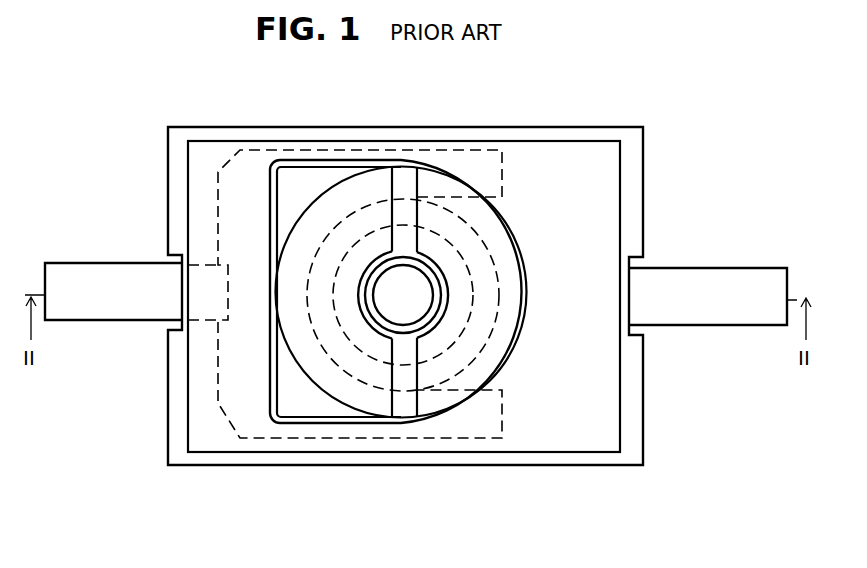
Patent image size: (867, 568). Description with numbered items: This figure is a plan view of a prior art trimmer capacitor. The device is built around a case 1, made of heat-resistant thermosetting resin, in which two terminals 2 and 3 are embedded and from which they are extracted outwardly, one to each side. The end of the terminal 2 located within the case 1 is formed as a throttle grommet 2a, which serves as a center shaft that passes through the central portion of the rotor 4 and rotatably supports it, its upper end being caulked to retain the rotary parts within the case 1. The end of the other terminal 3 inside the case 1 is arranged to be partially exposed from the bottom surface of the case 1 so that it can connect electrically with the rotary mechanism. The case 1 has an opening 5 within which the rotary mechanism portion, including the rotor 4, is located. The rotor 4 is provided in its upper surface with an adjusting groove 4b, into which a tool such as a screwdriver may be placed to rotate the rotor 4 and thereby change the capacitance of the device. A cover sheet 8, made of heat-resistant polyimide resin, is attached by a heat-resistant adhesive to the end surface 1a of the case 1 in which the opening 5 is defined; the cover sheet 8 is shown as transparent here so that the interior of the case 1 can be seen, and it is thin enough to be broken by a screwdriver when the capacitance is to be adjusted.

The case 1 is at (648, 203).
The end surface 1a is at (630, 166).
The terminal 2 is at (674, 275).
The throttle grommet 2a is at (408, 327).
The terminal 3 is at (143, 310).
The rotor 4 is at (498, 228).
The adjusting groove 4b is at (400, 178).
The opening 5 is at (452, 408).
The cover sheet 8 is at (565, 445).